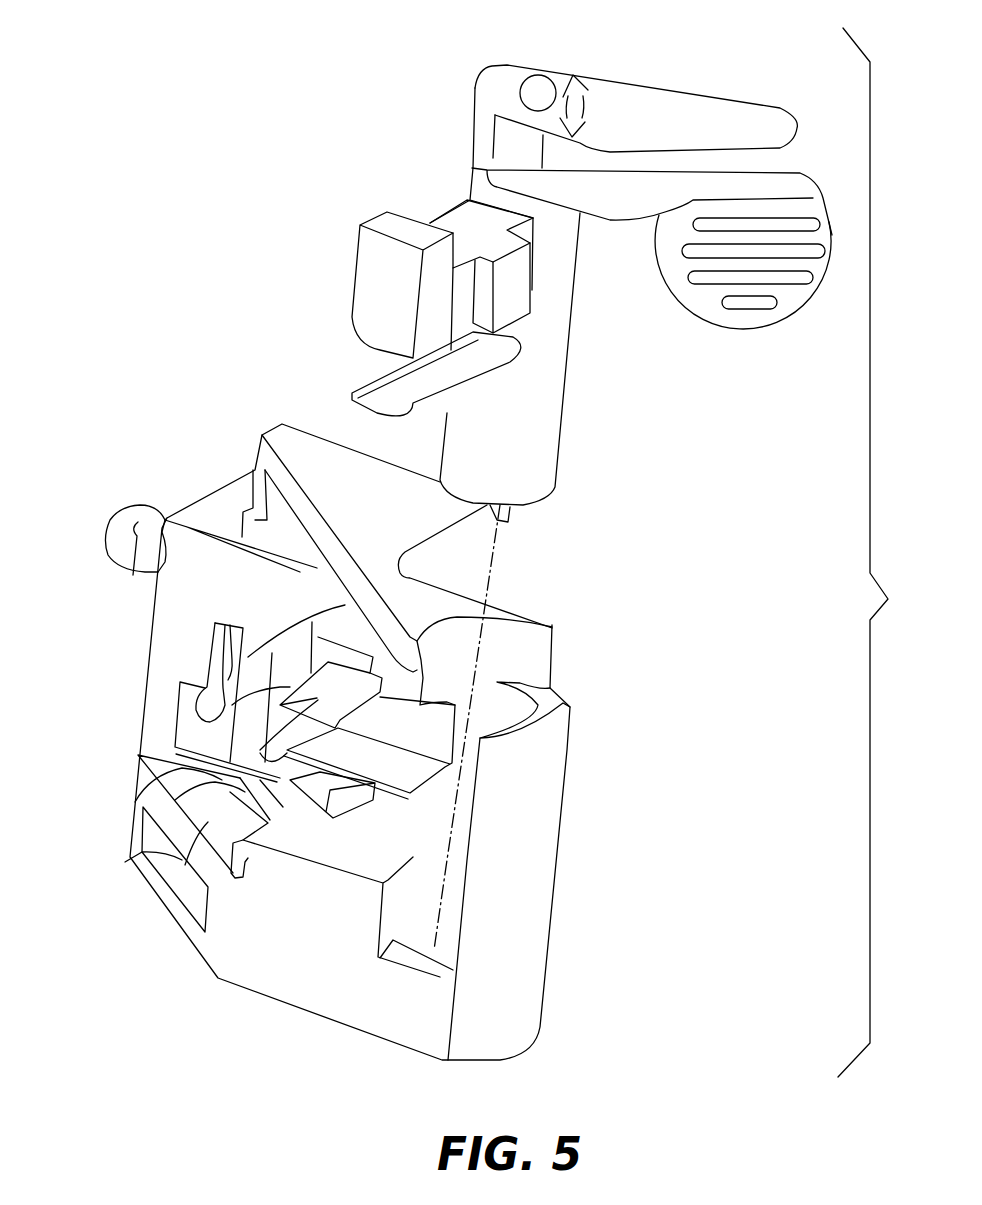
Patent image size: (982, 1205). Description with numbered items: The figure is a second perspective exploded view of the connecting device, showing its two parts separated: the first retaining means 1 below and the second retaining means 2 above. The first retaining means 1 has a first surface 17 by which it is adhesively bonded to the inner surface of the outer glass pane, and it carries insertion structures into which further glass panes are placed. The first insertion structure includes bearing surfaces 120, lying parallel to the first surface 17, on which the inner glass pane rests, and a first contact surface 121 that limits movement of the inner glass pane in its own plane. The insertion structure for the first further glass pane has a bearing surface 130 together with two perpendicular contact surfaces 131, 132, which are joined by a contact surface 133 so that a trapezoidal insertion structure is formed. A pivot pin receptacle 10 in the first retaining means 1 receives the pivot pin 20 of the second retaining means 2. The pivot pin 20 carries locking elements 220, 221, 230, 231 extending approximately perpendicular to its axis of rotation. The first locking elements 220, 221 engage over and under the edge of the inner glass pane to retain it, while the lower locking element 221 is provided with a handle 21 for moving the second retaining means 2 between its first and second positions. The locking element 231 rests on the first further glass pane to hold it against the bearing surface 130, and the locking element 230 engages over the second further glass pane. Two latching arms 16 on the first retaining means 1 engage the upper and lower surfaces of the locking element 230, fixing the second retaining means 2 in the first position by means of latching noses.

The first retaining means 1 is at (560, 619).
The second retaining means 2 is at (418, 156).
The pivot pin receptacle 10 is at (570, 707).
The latching arms 16 is at (205, 717).
The first surface 17 is at (263, 993).
The pivot pin 20 is at (541, 433).
The handle 21 is at (787, 293).
The bearing surfaces 120 is at (157, 572).
The first contact surface 121 is at (327, 553).
The bearing surface 130 is at (210, 820).
The contact surface 131 is at (137, 801).
The contact surface 132 is at (248, 884).
The contact surface 133 is at (130, 858).
The first locking element 220 is at (681, 115).
The lower locking element 221 is at (607, 200).
The locking element 230 is at (370, 287).
The locking element 231 is at (388, 392).